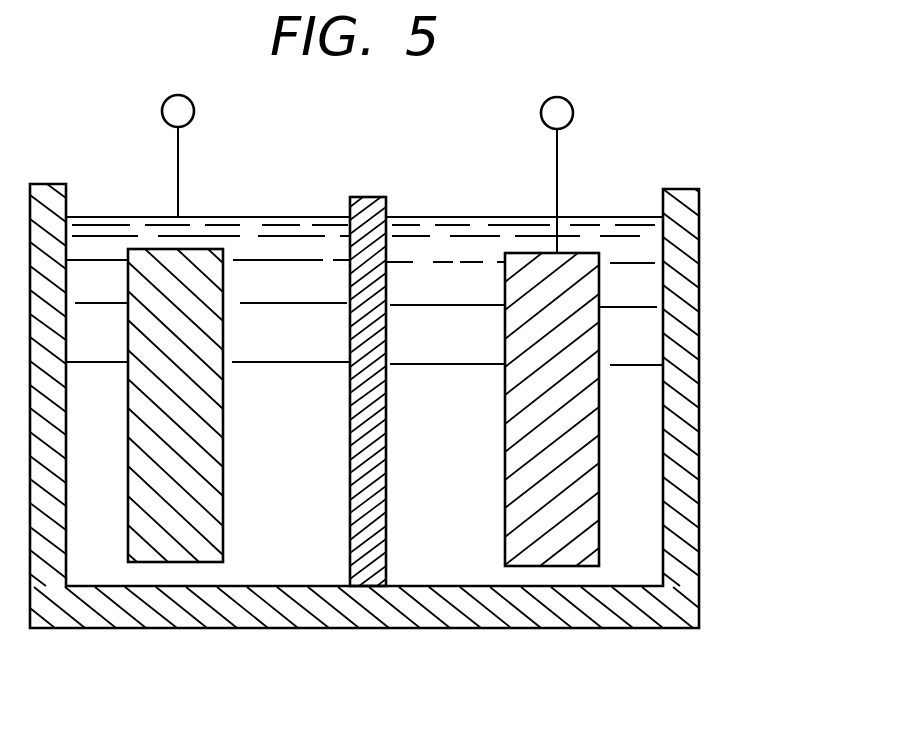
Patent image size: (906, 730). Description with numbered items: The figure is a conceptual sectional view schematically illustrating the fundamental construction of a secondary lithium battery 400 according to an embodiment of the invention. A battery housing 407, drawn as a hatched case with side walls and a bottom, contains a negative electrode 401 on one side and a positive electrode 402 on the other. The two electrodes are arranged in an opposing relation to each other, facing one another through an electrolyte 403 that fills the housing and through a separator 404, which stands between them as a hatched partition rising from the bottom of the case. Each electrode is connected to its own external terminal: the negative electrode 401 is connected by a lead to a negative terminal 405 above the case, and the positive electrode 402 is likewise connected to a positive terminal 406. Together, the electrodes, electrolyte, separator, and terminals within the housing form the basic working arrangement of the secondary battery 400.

The secondary battery 400 is at (710, 446).
The negative electrode 401 is at (188, 556).
The positive electrode 402 is at (557, 557).
The electrolyte 403 is at (465, 575).
The separator 404 is at (378, 196).
The negative terminal 405 is at (186, 98).
The positive terminal 406 is at (568, 101).
The battery housing 407 is at (97, 573).